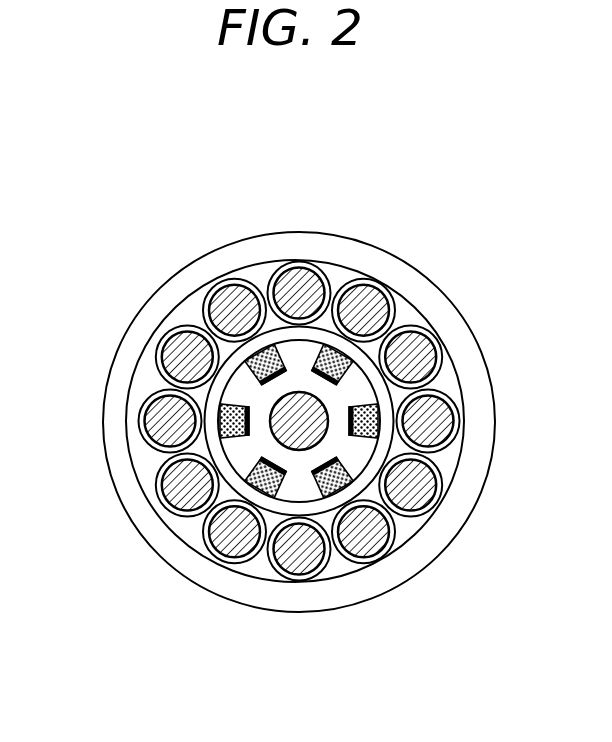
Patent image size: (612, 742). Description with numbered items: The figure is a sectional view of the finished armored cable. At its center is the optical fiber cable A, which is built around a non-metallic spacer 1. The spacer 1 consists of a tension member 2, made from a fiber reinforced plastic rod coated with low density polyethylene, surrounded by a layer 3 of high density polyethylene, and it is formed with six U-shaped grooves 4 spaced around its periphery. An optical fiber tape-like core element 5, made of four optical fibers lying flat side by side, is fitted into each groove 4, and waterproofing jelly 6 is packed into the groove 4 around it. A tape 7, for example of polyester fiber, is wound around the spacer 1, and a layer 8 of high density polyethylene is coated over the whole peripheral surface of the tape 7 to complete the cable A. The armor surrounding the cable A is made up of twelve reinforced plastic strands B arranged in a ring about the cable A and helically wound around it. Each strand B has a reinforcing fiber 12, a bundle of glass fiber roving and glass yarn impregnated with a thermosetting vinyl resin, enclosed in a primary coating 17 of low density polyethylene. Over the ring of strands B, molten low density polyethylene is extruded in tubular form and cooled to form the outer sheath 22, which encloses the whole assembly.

The spacer 1 is at (240, 452).
The tension member 2 is at (315, 428).
The layer of high density polyethylene 3 is at (363, 392).
The U-shaped groove 4 is at (288, 352).
The optical fiber tape-like core element 5 is at (280, 450).
The jelly 6 is at (340, 477).
The tape 7 is at (355, 370).
The layer of high density polyethylene 8 is at (235, 363).
The reinforcing fiber 12 is at (278, 292).
The primary coating 17 is at (342, 353).
The sheath 22 is at (272, 238).
The optical fiber cable A is at (348, 350).
The armoring strand B is at (381, 279).